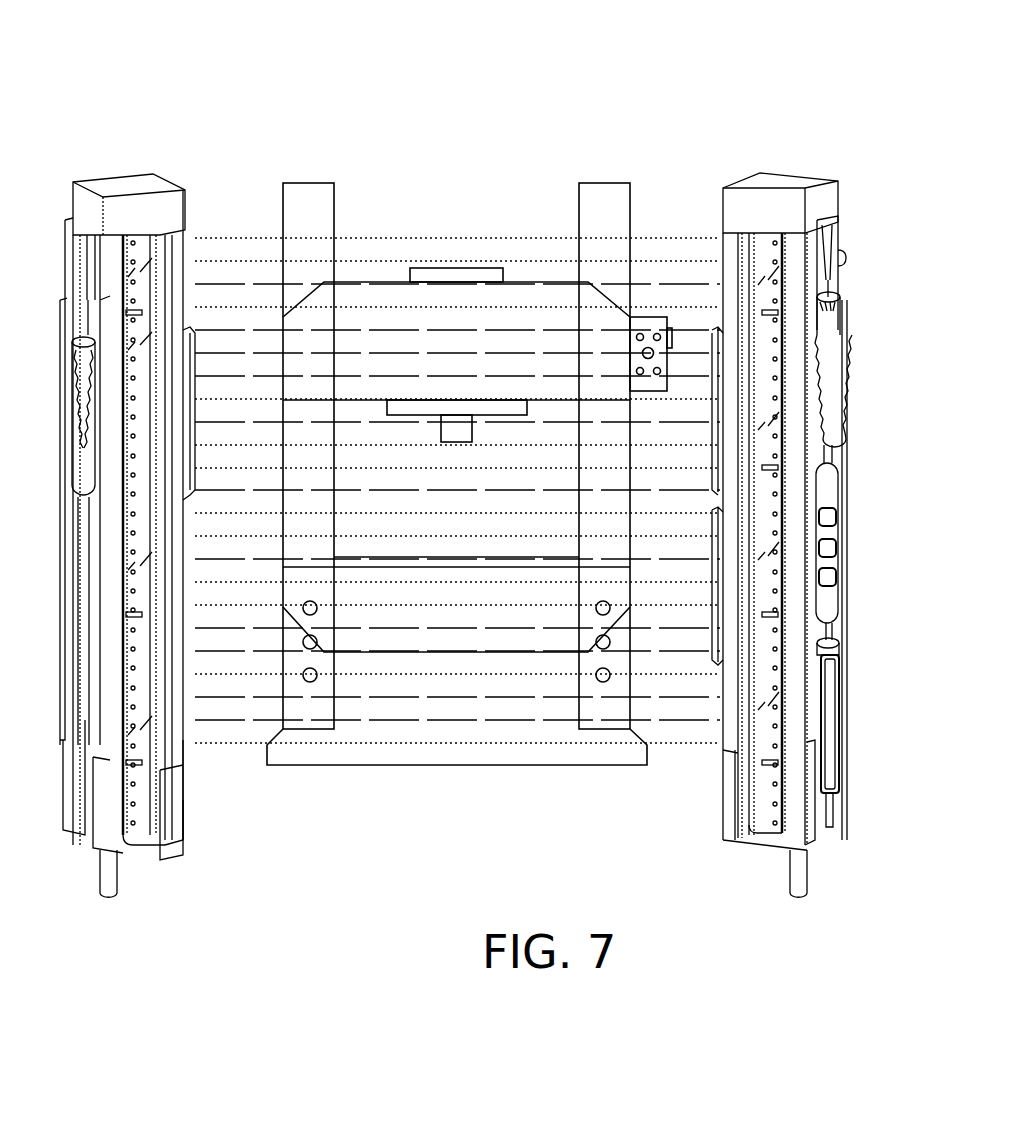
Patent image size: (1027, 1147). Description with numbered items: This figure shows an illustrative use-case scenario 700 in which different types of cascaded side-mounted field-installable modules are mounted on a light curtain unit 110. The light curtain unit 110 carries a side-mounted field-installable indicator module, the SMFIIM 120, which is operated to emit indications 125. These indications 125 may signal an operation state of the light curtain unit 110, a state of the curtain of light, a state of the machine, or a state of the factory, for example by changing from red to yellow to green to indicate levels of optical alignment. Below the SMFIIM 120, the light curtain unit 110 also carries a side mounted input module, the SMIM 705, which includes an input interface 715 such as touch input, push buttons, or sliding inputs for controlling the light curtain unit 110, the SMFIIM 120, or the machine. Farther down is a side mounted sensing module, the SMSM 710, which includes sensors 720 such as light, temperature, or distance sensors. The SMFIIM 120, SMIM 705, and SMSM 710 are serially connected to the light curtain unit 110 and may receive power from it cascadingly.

The illustrative use-case scenario 700 is at (152, 62).
The light curtain unit 110 is at (840, 238).
The side-mounted field-installable indicator module (SMFIIM) 120 is at (840, 305).
The indications 125 is at (832, 372).
The side mounted input module (SMIM) 705 is at (838, 480).
The input interface 715 is at (838, 548).
The side mounted sensing module (SMSM) 710 is at (841, 658).
The sensors 720 is at (840, 723).